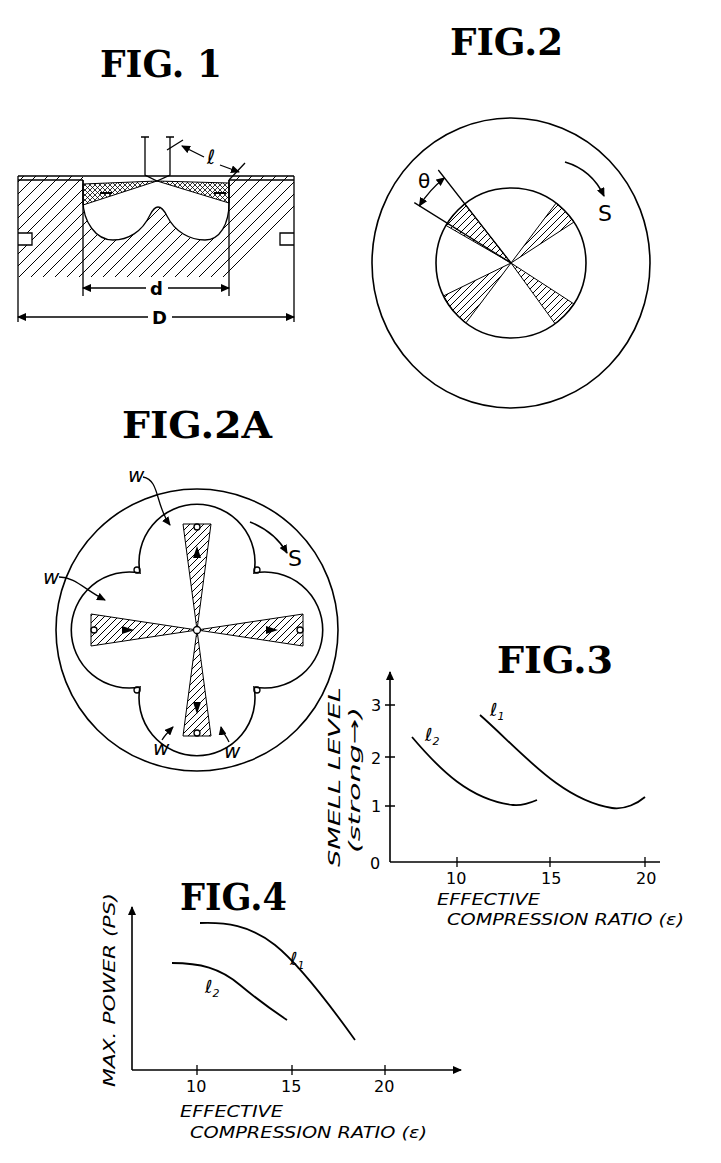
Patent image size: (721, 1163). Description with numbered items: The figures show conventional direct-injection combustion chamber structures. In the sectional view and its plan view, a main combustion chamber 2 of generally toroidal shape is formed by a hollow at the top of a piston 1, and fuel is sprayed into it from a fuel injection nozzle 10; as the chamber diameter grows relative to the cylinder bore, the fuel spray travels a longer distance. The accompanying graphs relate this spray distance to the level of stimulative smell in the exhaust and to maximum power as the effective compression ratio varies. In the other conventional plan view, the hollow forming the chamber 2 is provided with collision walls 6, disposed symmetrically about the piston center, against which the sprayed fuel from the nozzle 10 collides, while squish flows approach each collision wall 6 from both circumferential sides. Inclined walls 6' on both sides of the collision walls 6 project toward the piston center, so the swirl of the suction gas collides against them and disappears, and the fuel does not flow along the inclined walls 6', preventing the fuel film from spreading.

In FIG. 1, the piston 1 is at (282, 208).
In FIG. 2, the piston 1 is at (597, 335).
In FIG. 2A, the piston 1 is at (270, 497).
In FIG. 1, the main combustion chamber 2 is at (210, 222).
In FIG. 2, the main combustion chamber 2 is at (568, 267).
In FIG. 2A, the main combustion chamber 2 is at (112, 676).
In FIG. 2A, the collision walls 6 is at (194, 626).
In FIG. 2A, the inclined walls 6' is at (199, 627).
In FIG. 1, the fuel injection nozzle 10 is at (150, 163).
In FIG. 2A, the fuel injection nozzle 10 is at (194, 626).